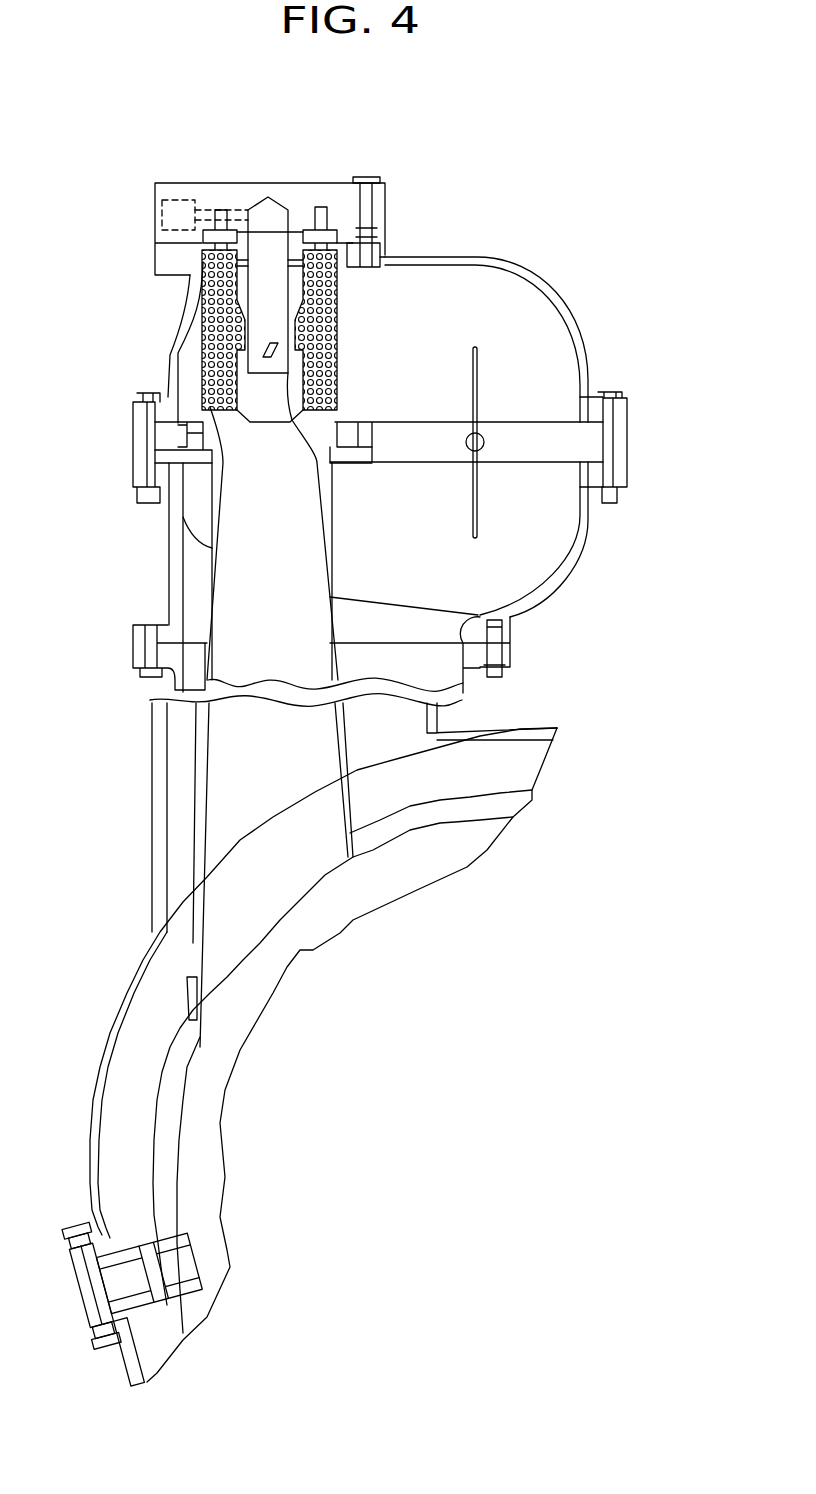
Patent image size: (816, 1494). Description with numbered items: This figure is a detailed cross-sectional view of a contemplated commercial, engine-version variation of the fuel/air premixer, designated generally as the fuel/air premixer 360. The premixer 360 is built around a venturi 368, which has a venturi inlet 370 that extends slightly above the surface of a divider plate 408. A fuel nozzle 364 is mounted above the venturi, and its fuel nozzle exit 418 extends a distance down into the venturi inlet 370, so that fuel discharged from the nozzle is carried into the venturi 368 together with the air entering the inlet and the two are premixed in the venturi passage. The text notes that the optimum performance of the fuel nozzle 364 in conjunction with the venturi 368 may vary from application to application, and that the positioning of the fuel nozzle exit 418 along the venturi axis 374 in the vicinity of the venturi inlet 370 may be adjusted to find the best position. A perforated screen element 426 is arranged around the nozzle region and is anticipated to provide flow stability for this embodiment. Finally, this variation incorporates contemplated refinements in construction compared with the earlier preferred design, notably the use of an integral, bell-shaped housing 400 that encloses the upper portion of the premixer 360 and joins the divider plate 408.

The fuel/air premixer 360 is at (566, 242).
The fuel nozzle 364 is at (331, 182).
The venturi 368 is at (217, 566).
The venturi inlet 370 is at (330, 410).
The venturi axis 374 is at (258, 518).
The bell-shaped housing 400 is at (578, 312).
The divider plate 408 is at (625, 420).
The fuel nozzle exit 418 is at (303, 352).
The perforated screen element 426 is at (208, 358).